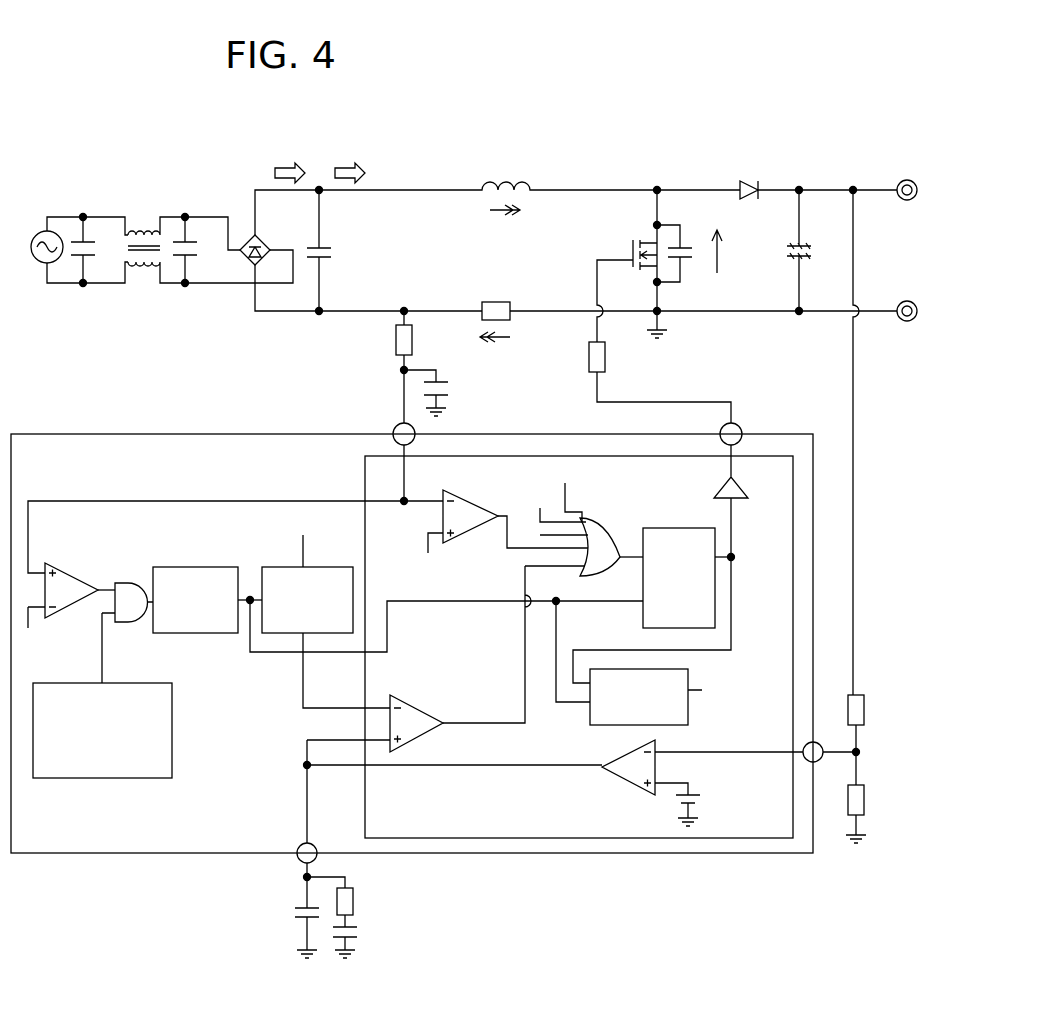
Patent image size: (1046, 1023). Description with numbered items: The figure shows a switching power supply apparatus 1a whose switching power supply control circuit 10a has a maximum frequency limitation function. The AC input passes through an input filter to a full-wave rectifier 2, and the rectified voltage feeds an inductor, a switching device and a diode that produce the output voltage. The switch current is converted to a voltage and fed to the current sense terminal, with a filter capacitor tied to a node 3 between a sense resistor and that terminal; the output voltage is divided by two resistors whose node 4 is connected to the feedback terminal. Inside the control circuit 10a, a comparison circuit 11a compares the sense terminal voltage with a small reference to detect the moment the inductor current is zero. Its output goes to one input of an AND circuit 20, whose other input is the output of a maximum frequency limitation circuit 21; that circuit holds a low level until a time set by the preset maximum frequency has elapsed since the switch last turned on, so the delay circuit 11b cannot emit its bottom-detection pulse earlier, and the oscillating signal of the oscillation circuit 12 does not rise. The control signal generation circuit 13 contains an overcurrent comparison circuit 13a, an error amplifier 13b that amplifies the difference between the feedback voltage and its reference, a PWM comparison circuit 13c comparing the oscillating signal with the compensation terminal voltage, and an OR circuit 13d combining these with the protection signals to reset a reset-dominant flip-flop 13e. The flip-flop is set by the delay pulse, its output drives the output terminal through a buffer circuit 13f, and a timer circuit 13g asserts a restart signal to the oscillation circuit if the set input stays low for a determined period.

The switching power supply apparatus 1a is at (908, 109).
The full-wave rectifier 2 is at (270, 238).
The node 3 is at (398, 370).
The node 4 is at (862, 752).
The switching power supply control circuit 10a is at (152, 433).
The comparison circuit 11a is at (78, 576).
The delay circuit 11b is at (200, 567).
The oscillation circuit 12 is at (280, 567).
The control signal generation circuit 13 is at (521, 838).
The comparison circuit 13a is at (452, 490).
The error amplifier 13b is at (630, 755).
The comparison circuit 13c is at (420, 712).
The OR circuit 13d is at (600, 543).
The flip-flop 13e is at (672, 528).
The buffer circuit 13f is at (742, 497).
The timer circuit 13g is at (688, 720).
The AND circuit 20 is at (140, 582).
The maximum frequency limitation circuit 21 is at (144, 683).